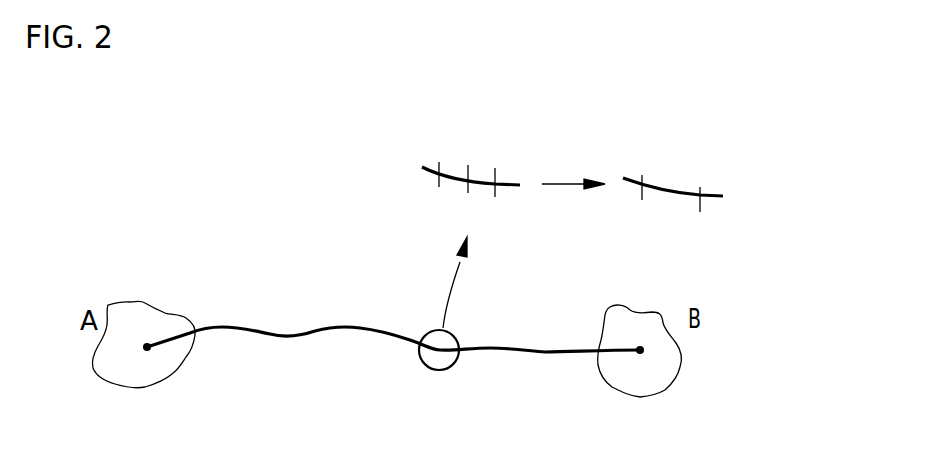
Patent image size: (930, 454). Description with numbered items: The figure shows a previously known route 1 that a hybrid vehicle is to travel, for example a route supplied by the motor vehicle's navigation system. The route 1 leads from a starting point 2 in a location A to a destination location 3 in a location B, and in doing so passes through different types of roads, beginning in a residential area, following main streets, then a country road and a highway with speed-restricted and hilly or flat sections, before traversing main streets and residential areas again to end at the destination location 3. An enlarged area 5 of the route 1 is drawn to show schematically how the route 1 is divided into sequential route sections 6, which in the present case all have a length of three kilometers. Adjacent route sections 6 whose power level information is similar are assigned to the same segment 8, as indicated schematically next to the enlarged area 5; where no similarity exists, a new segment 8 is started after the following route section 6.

The route 1 is at (310, 330).
The starting point 2 is at (147, 347).
The destination location 3 is at (640, 350).
The enlarged area 5 is at (433, 370).
The route sections 6 is at (457, 177).
The segment 8 is at (675, 192).